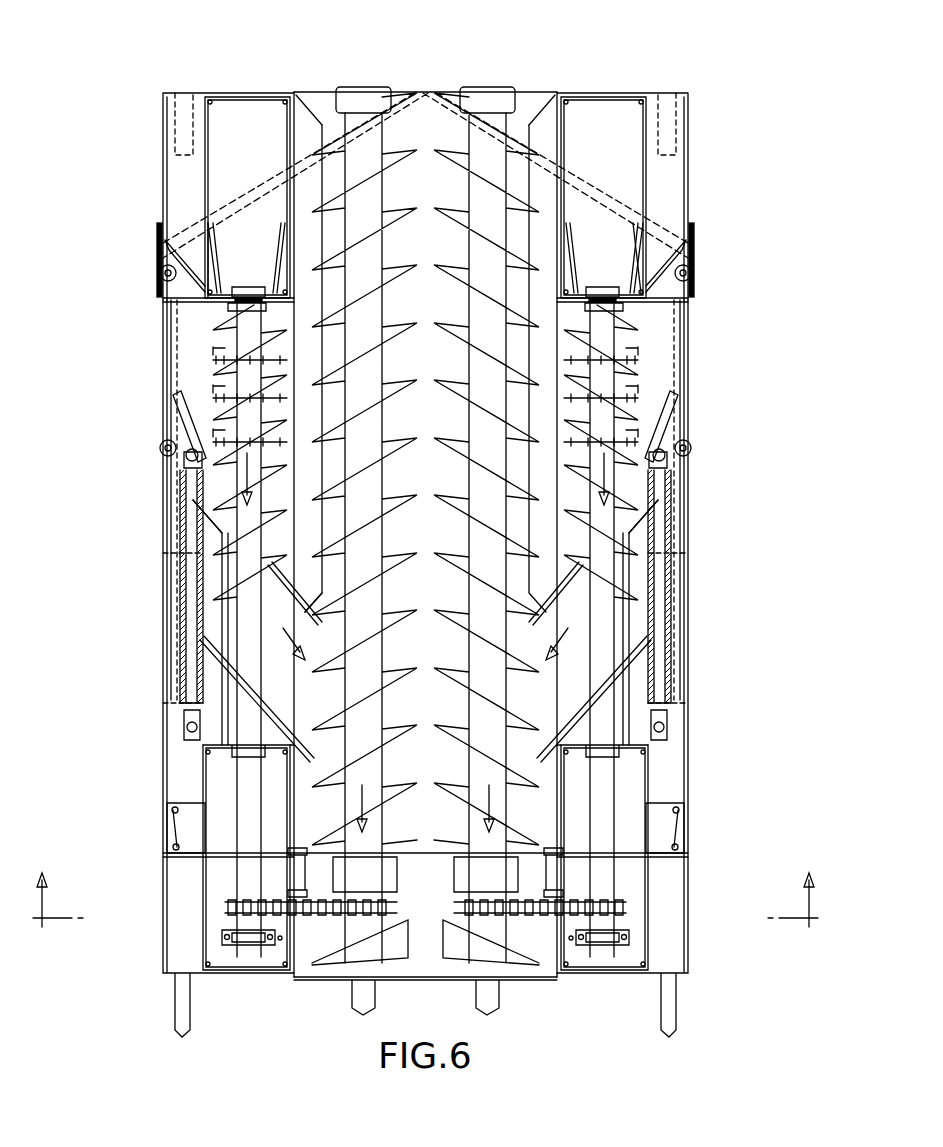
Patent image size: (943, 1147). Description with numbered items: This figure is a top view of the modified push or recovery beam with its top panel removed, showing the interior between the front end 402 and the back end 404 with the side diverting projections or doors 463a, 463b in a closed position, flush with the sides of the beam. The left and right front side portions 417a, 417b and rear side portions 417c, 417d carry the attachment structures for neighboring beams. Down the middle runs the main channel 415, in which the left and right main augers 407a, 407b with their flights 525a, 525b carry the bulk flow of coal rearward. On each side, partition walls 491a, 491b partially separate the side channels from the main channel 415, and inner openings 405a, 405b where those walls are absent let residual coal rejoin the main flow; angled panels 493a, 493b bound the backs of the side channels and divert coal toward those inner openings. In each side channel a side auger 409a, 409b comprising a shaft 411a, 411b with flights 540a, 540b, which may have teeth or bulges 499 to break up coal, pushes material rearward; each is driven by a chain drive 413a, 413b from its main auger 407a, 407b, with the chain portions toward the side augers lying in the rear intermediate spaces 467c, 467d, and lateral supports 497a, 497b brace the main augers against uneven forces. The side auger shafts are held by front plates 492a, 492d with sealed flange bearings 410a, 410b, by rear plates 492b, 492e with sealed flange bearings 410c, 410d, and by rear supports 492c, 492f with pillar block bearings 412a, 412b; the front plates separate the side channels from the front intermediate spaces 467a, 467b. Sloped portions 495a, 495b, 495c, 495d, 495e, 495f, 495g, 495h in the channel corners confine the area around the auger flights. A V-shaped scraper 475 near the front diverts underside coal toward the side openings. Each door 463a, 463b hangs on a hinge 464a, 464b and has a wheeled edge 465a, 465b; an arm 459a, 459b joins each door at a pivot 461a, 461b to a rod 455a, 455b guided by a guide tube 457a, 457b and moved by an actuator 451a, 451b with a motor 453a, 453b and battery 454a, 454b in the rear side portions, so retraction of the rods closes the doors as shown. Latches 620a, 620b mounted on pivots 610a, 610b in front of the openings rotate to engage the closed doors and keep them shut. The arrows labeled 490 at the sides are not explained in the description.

The front end 402 is at (593, 93).
The back end 404 is at (590, 980).
The left inner opening 405a is at (205, 714).
The right inner opening 405b is at (646, 714).
The left main auger 407a is at (358, 200).
The right main auger 407b is at (485, 190).
The left side auger 409a is at (215, 387).
The right side auger 409b is at (636, 387).
The sealed flange bearing 410a is at (250, 285).
The sealed flange bearing 410b is at (600, 285).
The sealed flange bearing 410c is at (240, 762).
The sealed flange bearing 410d is at (611, 762).
The shaft 411a is at (240, 906).
The shaft 411b is at (611, 906).
The pillar block bearing 412a is at (250, 948).
The pillar block bearing 412b is at (600, 948).
The first chain drive 413a is at (303, 912).
The second chain drive 413b is at (548, 912).
The main channel 415 is at (428, 185).
The left front side portion 417a is at (200, 173).
The right front side portion 417b is at (672, 172).
The left rear side portion 417c is at (205, 940).
The right rear side portion 417d is at (646, 940).
The left actuator 451a is at (180, 802).
The right actuator 451b is at (671, 802).
The motor 453a is at (175, 820).
The motor 453b is at (676, 820).
The battery 454a is at (178, 845).
The battery 454b is at (673, 845).
The left rod 455a is at (190, 648).
The right rod 455b is at (661, 648).
The guide tube 457a is at (180, 697).
The guide tube 457b is at (671, 697).
The left arm 459a is at (180, 408).
The right arm 459b is at (671, 408).
The pivot 461a is at (160, 448).
The pivot 461b is at (691, 448).
The left diverting projection or door 463a is at (185, 315).
The right diverting projection or door 463b is at (666, 315).
The hinge 464a is at (195, 462).
The hinge 464b is at (656, 462).
The wheeled edge 465a is at (160, 273).
The wheeled edge 465b is at (691, 273).
The left front intermediate space 467a is at (245, 122).
The right front intermediate space 467b is at (630, 112).
The left rear intermediate space 467c is at (245, 868).
The right rear intermediate space 467d is at (606, 868).
The V-shaped scraper 475 is at (258, 210).
The direction indicator 490 is at (48, 925).
The left partition wall 491a is at (227, 340).
The right partition wall 491b is at (624, 340).
The left front plate 492a is at (200, 280).
The left rear plate 492b is at (215, 748).
The rear support 492c is at (280, 945).
The right front plate 492d is at (633, 267).
The right rear plate 492e is at (636, 748).
The rear support 492f is at (640, 945).
The left angled panel 493a is at (195, 683).
The right angled panel 493b is at (656, 683).
The sloped portion 495a is at (210, 546).
The sloped portion 495b is at (235, 597).
The sloped portion 495c is at (255, 622).
The sloped portion 495d is at (596, 622).
The sloped portion 495e is at (616, 597).
The sloped portion 495f is at (641, 546).
The sloped portion 495g is at (310, 760).
The sloped portion 495h is at (543, 757).
The first lateral support 497a is at (368, 873).
The second lateral support 497b is at (482, 852).
The teeth or bulges 499 is at (215, 360).
The flights 525a is at (400, 553).
The flights 525b is at (448, 497).
The flights 540a is at (215, 497).
The flights 540b is at (636, 497).
The pivot 610a is at (157, 225).
The pivot 610b is at (694, 225).
The latch 620a is at (165, 252).
The latch 620b is at (686, 252).